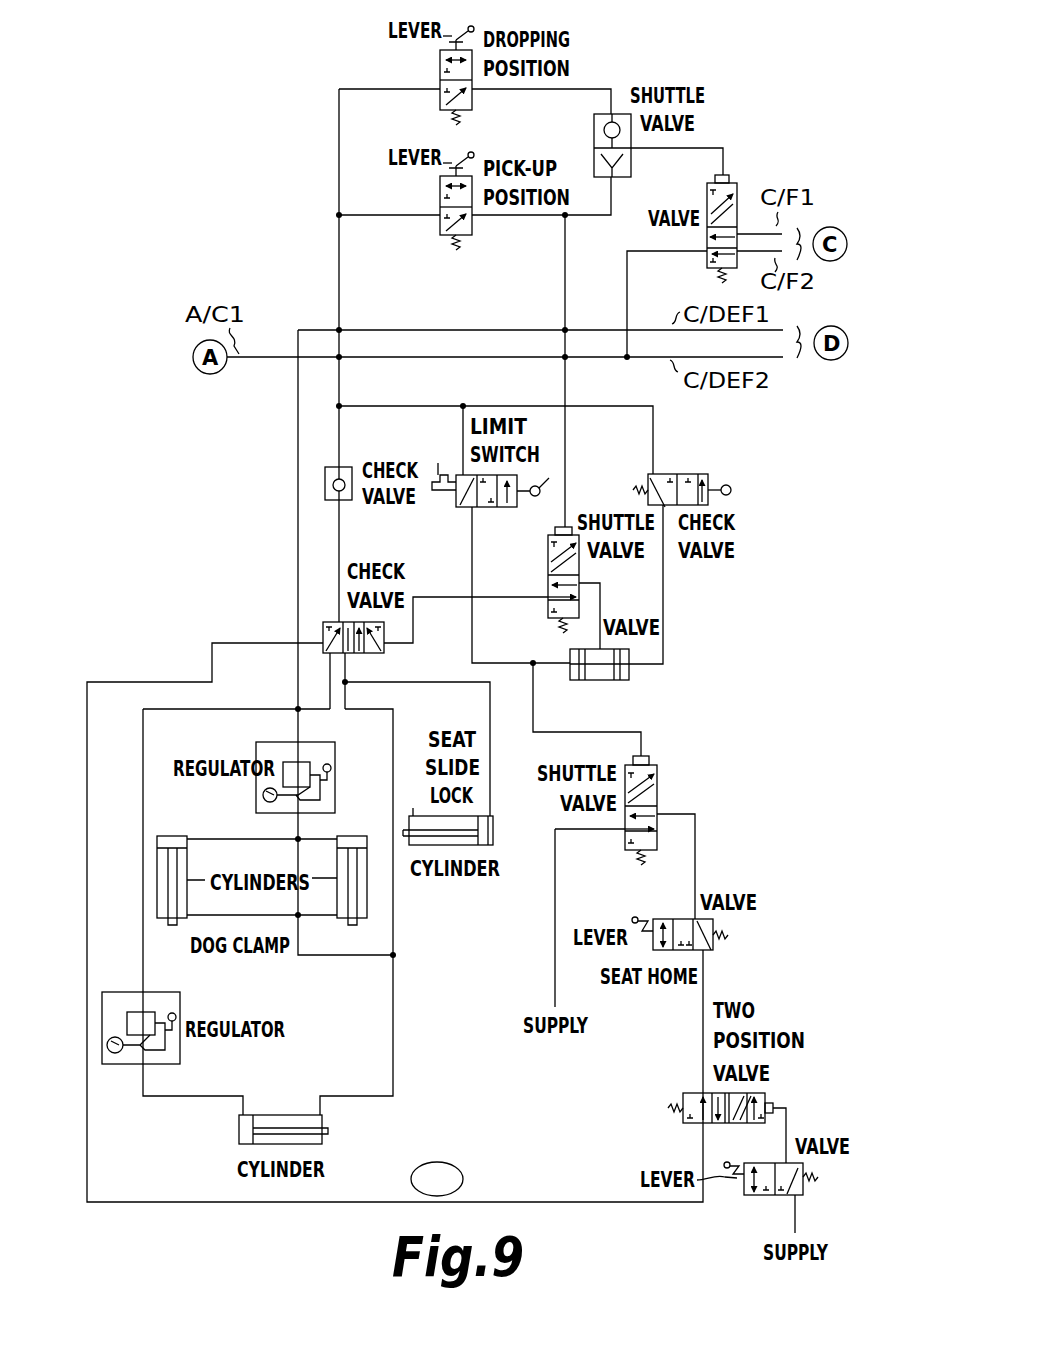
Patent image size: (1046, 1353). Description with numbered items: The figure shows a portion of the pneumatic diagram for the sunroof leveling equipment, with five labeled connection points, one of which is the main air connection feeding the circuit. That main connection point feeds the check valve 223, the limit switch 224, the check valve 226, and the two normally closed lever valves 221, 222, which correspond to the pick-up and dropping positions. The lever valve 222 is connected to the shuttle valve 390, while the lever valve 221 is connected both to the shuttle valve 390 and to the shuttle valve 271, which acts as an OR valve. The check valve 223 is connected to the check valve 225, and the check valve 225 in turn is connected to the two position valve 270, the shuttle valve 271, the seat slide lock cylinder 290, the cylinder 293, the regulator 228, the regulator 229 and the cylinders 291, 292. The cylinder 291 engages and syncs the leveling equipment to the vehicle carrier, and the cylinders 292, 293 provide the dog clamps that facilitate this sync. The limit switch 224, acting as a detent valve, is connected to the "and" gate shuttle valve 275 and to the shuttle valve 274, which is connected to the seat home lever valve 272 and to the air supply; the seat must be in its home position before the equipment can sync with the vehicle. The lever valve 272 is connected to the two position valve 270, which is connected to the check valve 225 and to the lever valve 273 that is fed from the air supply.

The lever valve 221 is at (474, 222).
The lever valve 222 is at (440, 72).
The check valve 223 is at (325, 467).
The limit switch 224 is at (487, 508).
The check valve 225 is at (385, 650).
The check valve 226 is at (690, 474).
The regulator 228 is at (331, 766).
The regulator 229 is at (180, 1004).
The two position valve 270 is at (683, 1094).
The shuttle valve 271 is at (548, 564).
The lever valve 272 is at (715, 923).
The lever valve 273 is at (744, 1193).
The shuttle valve 274 is at (657, 795).
The shuttle valve 275 is at (622, 680).
The seat slide lock cylinder 290 is at (448, 859).
The cylinder 291 is at (170, 836).
The cylinder 292 is at (356, 836).
The cylinder 293 is at (322, 1142).
The shuttle valve 390 is at (642, 116).